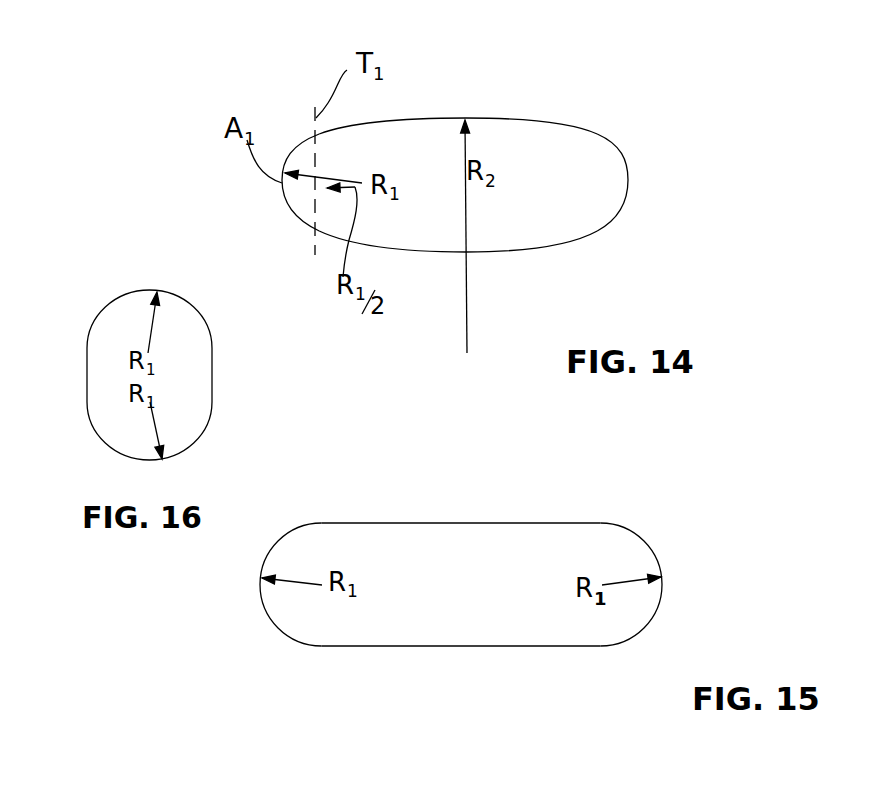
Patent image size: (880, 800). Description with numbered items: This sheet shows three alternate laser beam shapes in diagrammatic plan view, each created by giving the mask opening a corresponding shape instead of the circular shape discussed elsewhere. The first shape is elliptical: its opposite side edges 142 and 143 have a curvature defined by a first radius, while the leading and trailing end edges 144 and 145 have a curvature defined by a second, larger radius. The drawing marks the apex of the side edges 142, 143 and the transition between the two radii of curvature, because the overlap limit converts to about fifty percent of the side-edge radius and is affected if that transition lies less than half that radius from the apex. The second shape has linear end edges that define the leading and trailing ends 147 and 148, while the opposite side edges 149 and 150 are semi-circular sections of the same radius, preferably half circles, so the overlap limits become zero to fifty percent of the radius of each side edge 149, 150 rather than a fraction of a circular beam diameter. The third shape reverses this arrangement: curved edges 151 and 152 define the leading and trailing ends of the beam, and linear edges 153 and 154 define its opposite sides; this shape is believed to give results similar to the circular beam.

In FIG. 14, the side edge 142 is at (282, 190).
In FIG. 14, the side edge 143 is at (628, 180).
In FIG. 14, the leading end edge 144 is at (538, 120).
In FIG. 14, the trailing end edge 145 is at (532, 250).
In FIG. 15, the leading end 147 is at (475, 524).
In FIG. 15, the trailing end 148 is at (483, 647).
In FIG. 15, the side edge 149 is at (273, 620).
In FIG. 15, the side edge 150 is at (662, 590).
In FIG. 16, the curved edge 151 is at (138, 290).
In FIG. 16, the curved edge 152 is at (150, 462).
In FIG. 16, the linear edge 153 is at (87, 382).
In FIG. 16, the linear edge 154 is at (212, 380).